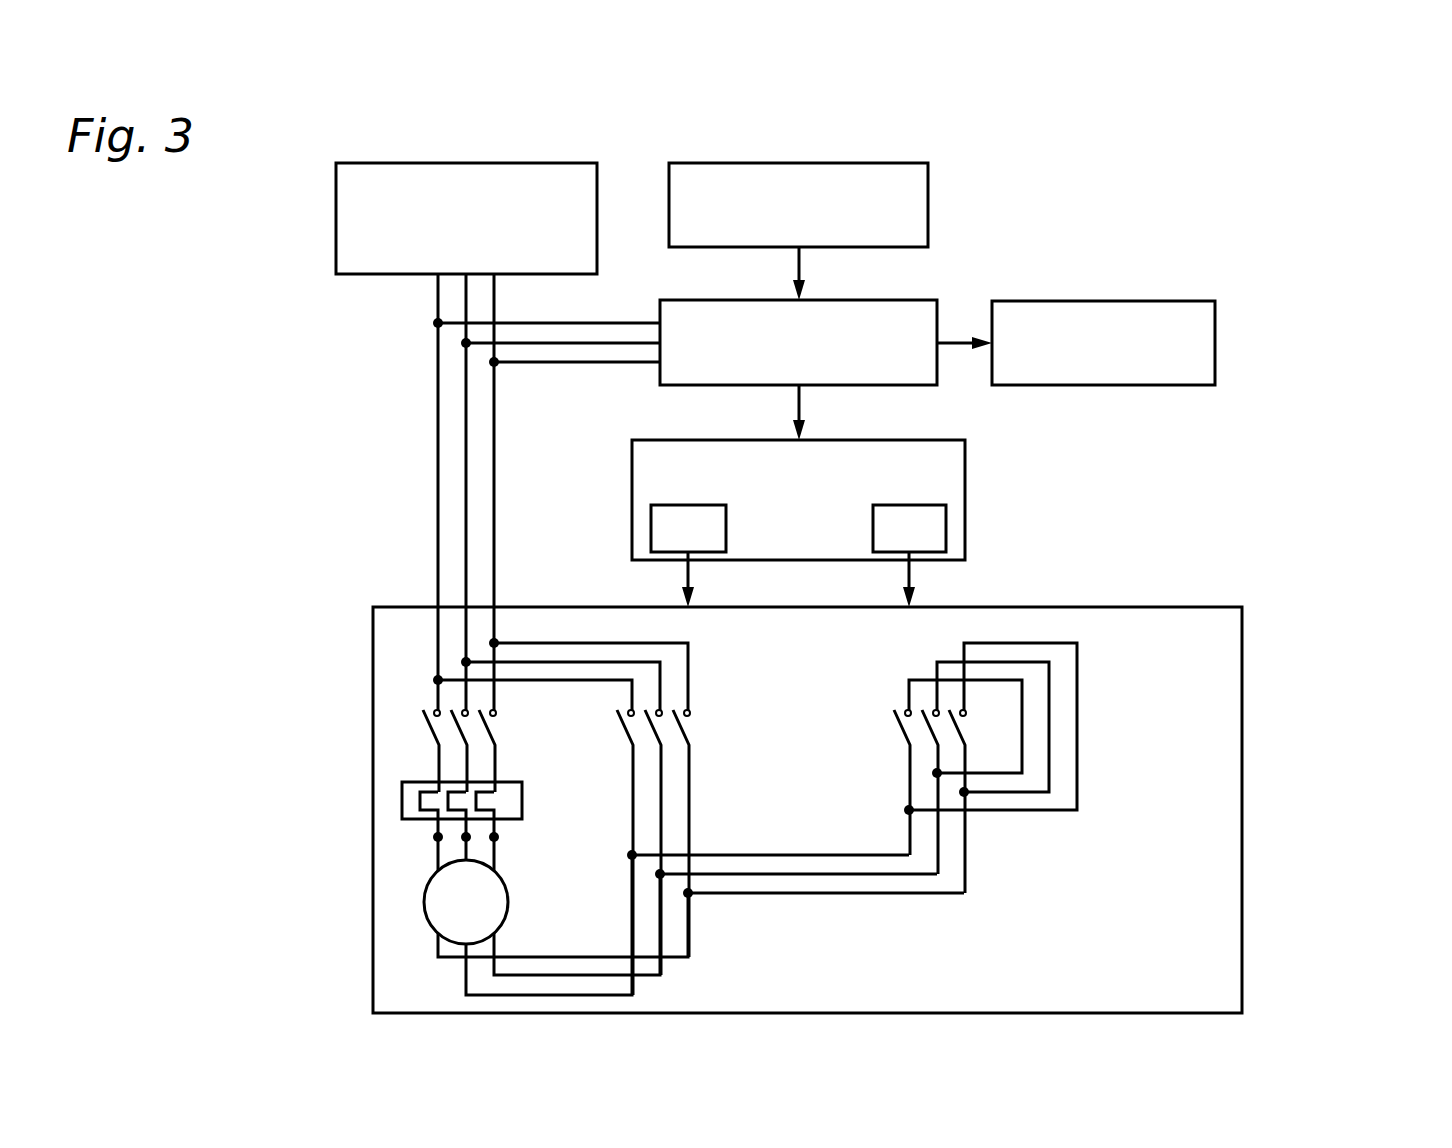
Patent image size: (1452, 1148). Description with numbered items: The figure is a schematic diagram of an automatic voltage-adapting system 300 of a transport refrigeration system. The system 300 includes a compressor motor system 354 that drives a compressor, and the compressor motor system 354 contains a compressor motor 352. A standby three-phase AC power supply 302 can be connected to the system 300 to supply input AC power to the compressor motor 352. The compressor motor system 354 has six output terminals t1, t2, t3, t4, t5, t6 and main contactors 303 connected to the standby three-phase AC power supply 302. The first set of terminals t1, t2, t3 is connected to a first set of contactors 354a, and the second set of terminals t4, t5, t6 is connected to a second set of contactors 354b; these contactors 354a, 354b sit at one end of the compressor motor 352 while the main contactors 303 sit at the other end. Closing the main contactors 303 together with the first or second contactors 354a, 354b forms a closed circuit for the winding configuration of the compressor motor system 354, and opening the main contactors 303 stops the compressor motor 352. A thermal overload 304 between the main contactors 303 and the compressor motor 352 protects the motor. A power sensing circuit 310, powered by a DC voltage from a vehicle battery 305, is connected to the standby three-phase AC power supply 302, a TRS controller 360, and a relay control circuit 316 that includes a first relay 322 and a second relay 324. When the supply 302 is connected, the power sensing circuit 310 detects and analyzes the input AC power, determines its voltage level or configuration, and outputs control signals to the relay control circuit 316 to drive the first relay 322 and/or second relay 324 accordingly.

The automatic voltage-adapting system 300 is at (1305, 278).
The standby 3-phase AC power supply 302 is at (488, 265).
The main contactors 303 is at (430, 730).
The thermal overload 304 is at (417, 820).
The vehicle battery 305 is at (821, 238).
The power sensing circuit 310 is at (821, 377).
The relay control circuit 316 is at (821, 515).
The first relay 322 is at (710, 542).
The second relay 324 is at (931, 542).
The compressor motor 352 is at (428, 925).
The compressor motor system 354 is at (1196, 606).
The first set of contactors 354a is at (692, 727).
The second set of contactors 354b is at (903, 730).
The TRS controller 360 is at (1125, 377).
The first output terminal t1 is at (620, 643).
The second output terminal t2 is at (592, 662).
The third output terminal t3 is at (568, 680).
The fourth output terminal t4 is at (830, 857).
The fifth output terminal t5 is at (807, 877).
The sixth output terminal t6 is at (780, 893).